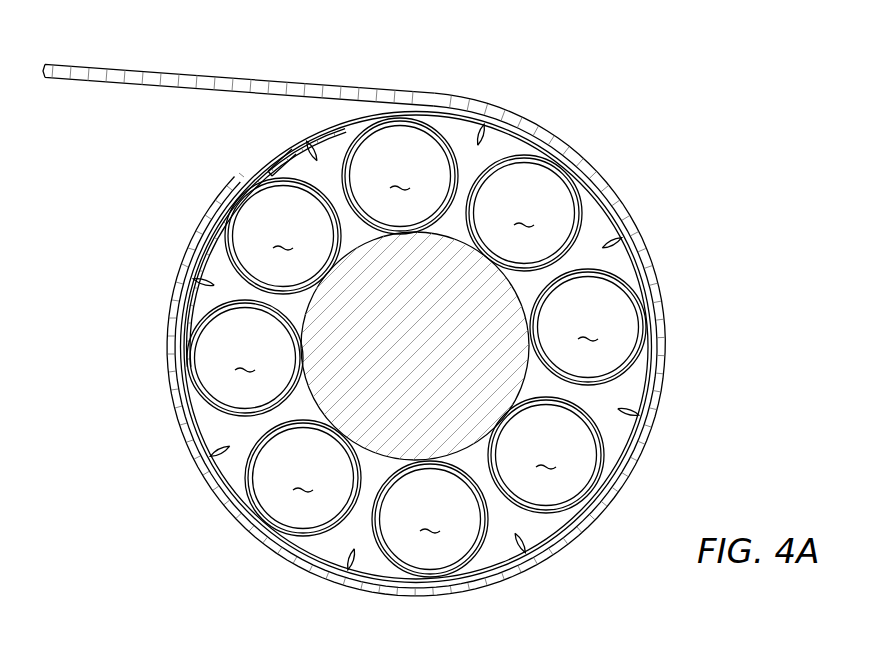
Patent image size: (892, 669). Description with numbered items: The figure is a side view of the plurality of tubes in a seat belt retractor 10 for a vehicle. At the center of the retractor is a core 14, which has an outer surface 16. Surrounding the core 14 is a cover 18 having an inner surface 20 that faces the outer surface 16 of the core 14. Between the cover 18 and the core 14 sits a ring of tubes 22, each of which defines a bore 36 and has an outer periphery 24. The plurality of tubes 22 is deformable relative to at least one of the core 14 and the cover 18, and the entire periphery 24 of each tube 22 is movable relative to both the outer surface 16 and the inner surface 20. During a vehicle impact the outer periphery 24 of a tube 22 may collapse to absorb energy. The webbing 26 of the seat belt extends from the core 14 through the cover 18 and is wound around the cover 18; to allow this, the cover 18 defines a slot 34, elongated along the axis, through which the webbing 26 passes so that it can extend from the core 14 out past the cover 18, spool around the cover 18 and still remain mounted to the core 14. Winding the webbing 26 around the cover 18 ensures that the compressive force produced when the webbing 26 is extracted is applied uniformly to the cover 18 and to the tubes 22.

The seat belt retractor 10 is at (716, 82).
The core 14 is at (428, 358).
The outer surface 16 is at (560, 383).
The cover 18 is at (352, 136).
The inner surface 20 is at (517, 148).
The tube 22 is at (497, 167).
The outer periphery 24 is at (343, 155).
The webbing 26 is at (120, 70).
The slot 34 is at (277, 157).
The bore 36 is at (417, 348).